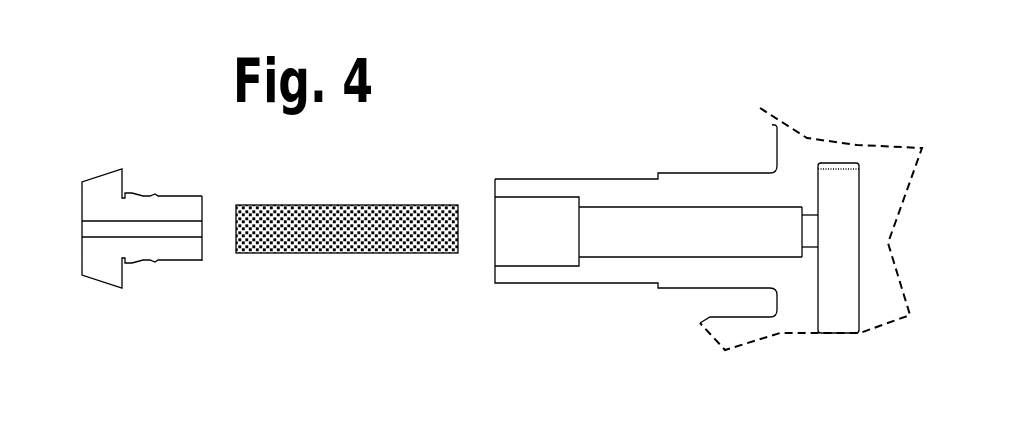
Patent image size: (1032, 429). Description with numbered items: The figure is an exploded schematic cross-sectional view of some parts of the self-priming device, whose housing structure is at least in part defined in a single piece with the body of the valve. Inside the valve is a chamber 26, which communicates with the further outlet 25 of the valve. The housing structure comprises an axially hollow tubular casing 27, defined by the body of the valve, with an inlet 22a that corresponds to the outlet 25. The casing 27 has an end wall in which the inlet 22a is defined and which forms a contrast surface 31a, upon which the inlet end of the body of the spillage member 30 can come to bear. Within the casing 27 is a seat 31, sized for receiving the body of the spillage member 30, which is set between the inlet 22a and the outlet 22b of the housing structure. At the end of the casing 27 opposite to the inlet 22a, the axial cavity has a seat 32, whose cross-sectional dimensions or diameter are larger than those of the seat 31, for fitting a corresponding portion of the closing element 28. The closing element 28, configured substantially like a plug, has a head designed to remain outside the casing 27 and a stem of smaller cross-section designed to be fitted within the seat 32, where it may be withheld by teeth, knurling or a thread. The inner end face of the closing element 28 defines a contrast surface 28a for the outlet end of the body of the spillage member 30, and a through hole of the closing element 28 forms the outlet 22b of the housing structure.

The inlet 22a is at (810, 250).
The outlet 22b is at (90, 227).
The further outlet 25 is at (774, 314).
The chamber 26 is at (838, 187).
The tubular casing 27 is at (687, 187).
The closing element 28 is at (105, 275).
The contrast surface 28a is at (203, 211).
The spillage member 30 is at (310, 247).
The seat 31 is at (645, 212).
The contrast surface 31a is at (800, 210).
The seat 32 is at (558, 197).